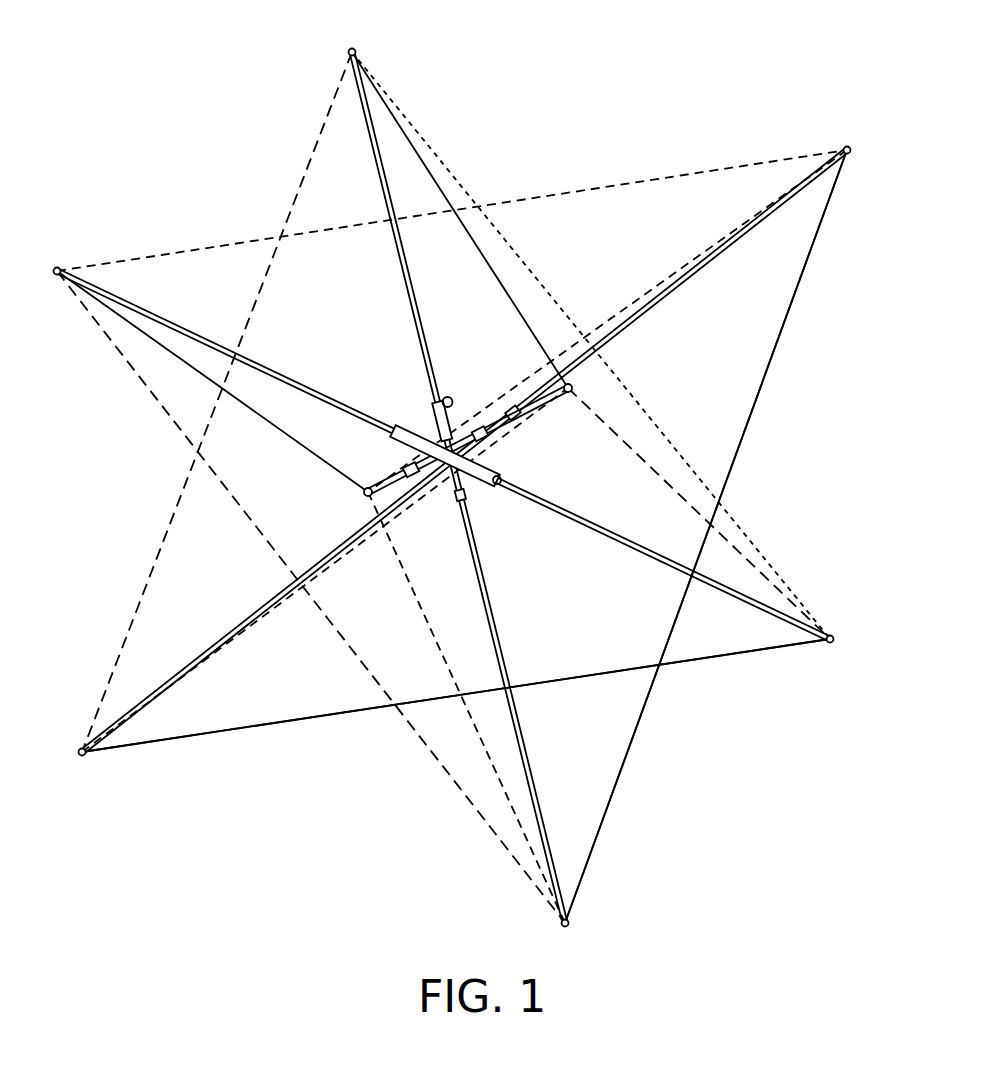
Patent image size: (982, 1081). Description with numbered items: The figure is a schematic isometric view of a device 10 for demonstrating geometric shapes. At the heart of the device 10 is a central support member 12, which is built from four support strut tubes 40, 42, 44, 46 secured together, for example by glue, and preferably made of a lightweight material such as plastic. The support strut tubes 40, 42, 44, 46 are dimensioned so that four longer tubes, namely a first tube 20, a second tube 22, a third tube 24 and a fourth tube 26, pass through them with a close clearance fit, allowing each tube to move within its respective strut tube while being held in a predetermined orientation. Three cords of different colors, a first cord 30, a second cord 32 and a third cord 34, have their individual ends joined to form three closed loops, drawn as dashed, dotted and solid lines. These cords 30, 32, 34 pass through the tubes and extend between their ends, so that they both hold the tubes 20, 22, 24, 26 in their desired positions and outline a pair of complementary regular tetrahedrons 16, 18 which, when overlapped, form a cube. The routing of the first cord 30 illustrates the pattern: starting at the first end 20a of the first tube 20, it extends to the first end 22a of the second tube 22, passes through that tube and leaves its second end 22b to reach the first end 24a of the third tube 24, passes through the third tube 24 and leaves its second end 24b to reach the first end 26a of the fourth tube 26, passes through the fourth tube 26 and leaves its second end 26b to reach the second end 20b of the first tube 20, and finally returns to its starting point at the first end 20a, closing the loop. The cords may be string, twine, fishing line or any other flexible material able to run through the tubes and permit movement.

The device 10 is at (546, 126).
The central support member 12 is at (383, 378).
The regular tetrahedron 16 is at (752, 656).
The regular tetrahedron 18 is at (625, 788).
The first tube 20 is at (700, 275).
The first end of the first tube 20a is at (848, 147).
The second end of the first tube 20b is at (86, 773).
The second tube 22 is at (158, 320).
The first end of the second tube 22a is at (66, 254).
The second end of the second tube 22b is at (862, 646).
The third tube 24 is at (412, 270).
The first end of the third tube 24a is at (376, 37).
The second end of the third tube 24b is at (596, 931).
The fourth tube 26 is at (393, 475).
The first end of the fourth tube 26a is at (341, 495).
The second end of the fourth tube 26b is at (600, 399).
The first cord 30 is at (636, 180).
The second cord 32 is at (740, 449).
The third cord 34 is at (412, 742).
The support strut tube 40 is at (420, 490).
The support strut tube 42 is at (493, 482).
The support strut tube 44 is at (449, 405).
The support strut tube 46 is at (486, 433).